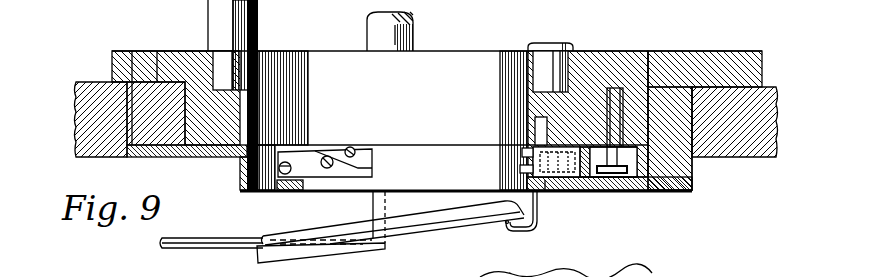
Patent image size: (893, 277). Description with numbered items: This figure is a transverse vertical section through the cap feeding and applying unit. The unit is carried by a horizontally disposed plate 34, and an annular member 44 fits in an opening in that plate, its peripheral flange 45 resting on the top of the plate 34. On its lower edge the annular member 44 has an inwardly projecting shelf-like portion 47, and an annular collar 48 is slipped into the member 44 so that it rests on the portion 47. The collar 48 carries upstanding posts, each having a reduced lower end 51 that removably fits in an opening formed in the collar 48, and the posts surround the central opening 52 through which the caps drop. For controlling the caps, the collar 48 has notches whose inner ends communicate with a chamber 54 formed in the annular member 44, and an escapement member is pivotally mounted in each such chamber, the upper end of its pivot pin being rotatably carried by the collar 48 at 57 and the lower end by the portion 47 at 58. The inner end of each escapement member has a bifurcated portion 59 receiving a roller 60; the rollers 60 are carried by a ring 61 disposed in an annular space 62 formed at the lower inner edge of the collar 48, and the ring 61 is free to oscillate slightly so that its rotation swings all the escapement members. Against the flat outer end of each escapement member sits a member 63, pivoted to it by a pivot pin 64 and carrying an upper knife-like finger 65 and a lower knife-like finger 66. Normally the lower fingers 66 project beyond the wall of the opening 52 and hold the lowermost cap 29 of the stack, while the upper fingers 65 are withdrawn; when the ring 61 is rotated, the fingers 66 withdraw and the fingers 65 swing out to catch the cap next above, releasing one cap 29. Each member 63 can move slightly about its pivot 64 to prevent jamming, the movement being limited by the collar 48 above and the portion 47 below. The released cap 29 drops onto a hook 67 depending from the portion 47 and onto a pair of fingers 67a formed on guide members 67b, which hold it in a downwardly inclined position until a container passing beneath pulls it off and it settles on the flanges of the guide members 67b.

The cap 29 is at (453, 223).
The plate 34 is at (745, 123).
The annular member 44 is at (672, 52).
The peripheral flange 45 is at (727, 52).
The shelf-like portion 47 is at (620, 191).
The annular collar 48 is at (611, 60).
The reduced lower end 51 is at (224, 72).
The central opening 52 is at (318, 72).
The chamber 54 is at (641, 181).
The upper pivot bearing 57 is at (540, 134).
The lower pivot bearing 58 is at (563, 186).
The bifurcated portion 59 is at (650, 167).
The roller 60 is at (652, 157).
The ring 61 is at (152, 115).
The annular space 62 is at (157, 51).
The finger member 63 is at (310, 165).
The pivot pin 64 is at (362, 170).
The upper knife-like finger 65 is at (528, 153).
The lower knife-like finger 66 is at (526, 169).
The hook 67 is at (530, 227).
The fingers 67a is at (384, 246).
The guide members 67b is at (243, 243).